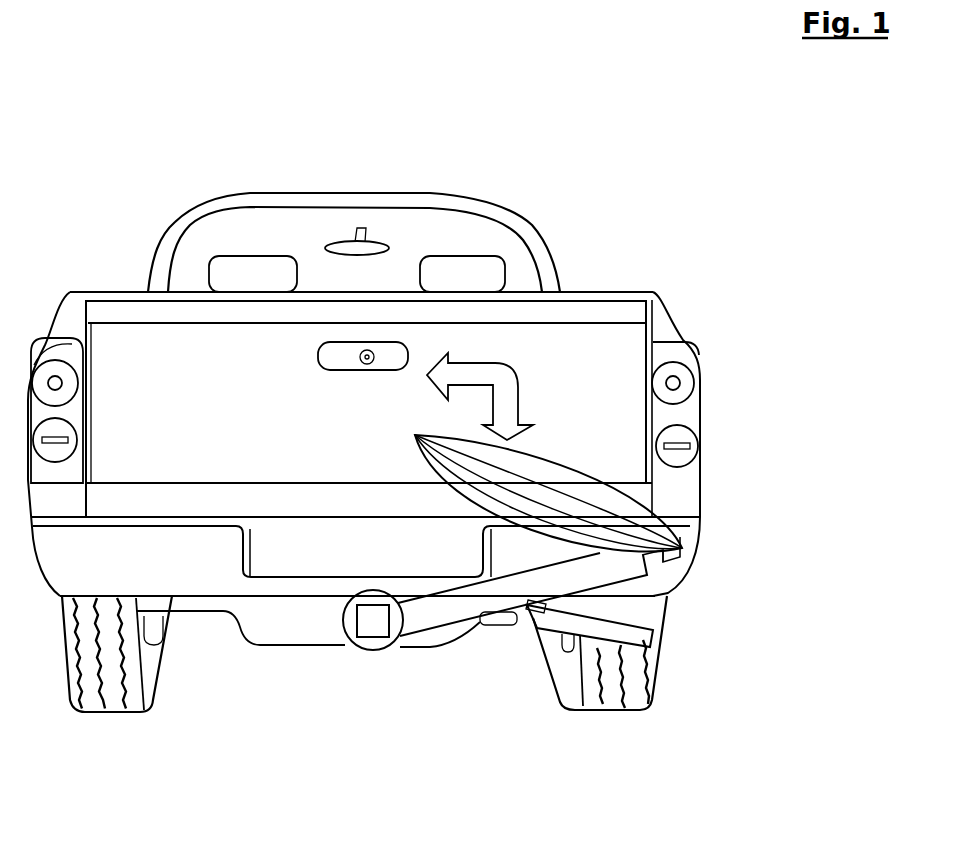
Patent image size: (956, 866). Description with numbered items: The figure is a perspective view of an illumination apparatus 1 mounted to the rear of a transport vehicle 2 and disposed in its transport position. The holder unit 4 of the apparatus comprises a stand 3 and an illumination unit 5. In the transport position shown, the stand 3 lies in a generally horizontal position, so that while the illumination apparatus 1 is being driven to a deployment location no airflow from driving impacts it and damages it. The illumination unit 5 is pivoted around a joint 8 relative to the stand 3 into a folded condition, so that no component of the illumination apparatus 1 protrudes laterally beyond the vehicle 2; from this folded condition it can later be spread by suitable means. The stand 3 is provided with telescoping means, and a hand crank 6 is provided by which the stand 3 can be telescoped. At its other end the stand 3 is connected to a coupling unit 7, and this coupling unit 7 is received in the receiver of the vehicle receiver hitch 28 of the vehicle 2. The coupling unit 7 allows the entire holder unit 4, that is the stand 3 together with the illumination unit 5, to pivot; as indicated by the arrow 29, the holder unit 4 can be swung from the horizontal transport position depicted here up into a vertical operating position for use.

The illumination apparatus 1 is at (560, 582).
The transport vehicle 2 is at (620, 380).
The stand 3 is at (480, 607).
The holder unit 4 is at (540, 628).
The illumination unit 5 is at (670, 483).
The hand crank 6 is at (503, 612).
The coupling unit 7 is at (374, 650).
The joint 8 is at (680, 540).
The vehicle receiver hitch 28 is at (353, 647).
The arrow 29 is at (510, 380).